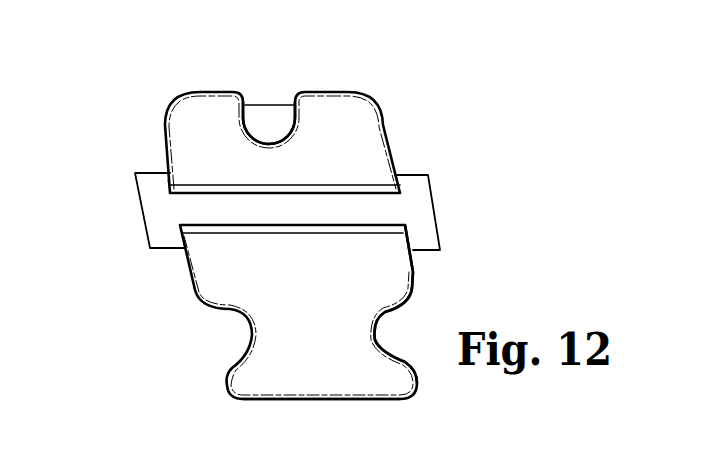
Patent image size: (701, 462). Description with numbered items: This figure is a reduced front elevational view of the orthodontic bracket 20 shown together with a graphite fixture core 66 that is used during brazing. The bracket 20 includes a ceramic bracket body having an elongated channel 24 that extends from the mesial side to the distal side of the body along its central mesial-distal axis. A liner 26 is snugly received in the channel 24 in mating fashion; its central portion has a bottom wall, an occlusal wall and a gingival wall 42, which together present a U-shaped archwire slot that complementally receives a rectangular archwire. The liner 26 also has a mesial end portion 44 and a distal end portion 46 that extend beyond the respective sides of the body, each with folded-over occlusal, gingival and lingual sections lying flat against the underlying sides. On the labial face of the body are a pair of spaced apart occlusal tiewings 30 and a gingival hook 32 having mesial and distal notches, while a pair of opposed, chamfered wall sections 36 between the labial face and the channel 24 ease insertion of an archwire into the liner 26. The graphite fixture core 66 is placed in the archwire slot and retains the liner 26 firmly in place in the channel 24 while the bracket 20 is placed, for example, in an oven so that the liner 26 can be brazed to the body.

The orthodontic bracket 20 is at (372, 93).
The occlusal tiewings 30 is at (310, 92).
The gingival wall 42 is at (222, 198).
The distal end portion 46 is at (170, 183).
The mesial end portion 44 is at (400, 185).
The graphite fixture core 66 is at (410, 200).
The liner 26 is at (168, 203).
The elongated channel 24 is at (200, 226).
The chamfered wall sections 36 is at (370, 232).
The gingival hook 32 is at (302, 388).